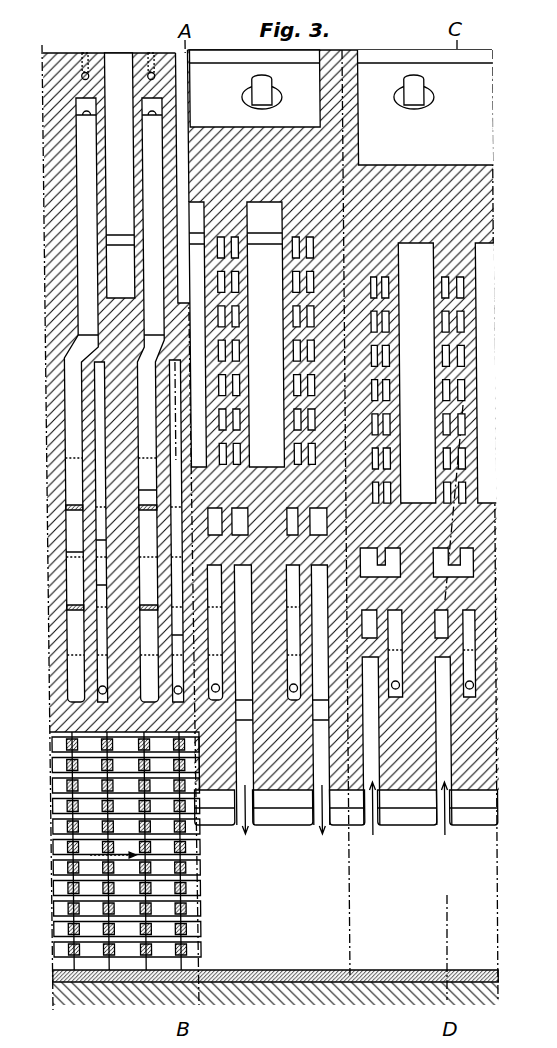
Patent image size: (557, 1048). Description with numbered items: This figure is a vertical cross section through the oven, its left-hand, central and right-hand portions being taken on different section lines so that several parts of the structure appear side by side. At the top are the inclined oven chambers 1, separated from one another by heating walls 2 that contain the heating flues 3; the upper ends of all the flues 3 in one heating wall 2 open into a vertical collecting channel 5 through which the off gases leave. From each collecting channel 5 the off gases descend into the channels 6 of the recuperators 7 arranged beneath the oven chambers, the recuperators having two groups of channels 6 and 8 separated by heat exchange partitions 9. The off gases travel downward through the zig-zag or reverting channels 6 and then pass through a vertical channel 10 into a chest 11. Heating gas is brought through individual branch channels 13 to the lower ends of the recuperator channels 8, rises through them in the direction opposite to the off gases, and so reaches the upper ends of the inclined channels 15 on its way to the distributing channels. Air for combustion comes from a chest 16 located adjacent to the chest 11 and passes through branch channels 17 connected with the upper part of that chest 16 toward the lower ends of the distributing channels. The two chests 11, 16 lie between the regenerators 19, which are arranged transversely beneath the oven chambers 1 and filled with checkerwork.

The oven chamber 1 is at (301, 278).
The heating wall 2 is at (141, 200).
The heating flue 3 is at (293, 385).
The collecting channel 5 is at (146, 133).
The recuperator channel 6 is at (68, 490).
The recuperator 7 is at (75, 554).
The recuperator channel 8 is at (98, 541).
The heat exchange partition 9 is at (498, 606).
The vertical channel 10 is at (300, 792).
The chest 11 is at (271, 895).
The branch channel 13 is at (92, 692).
The inclined channel 15 is at (216, 522).
The chest 16 is at (421, 895).
The branch channel 17 is at (425, 778).
The regenerator 19 is at (60, 835).